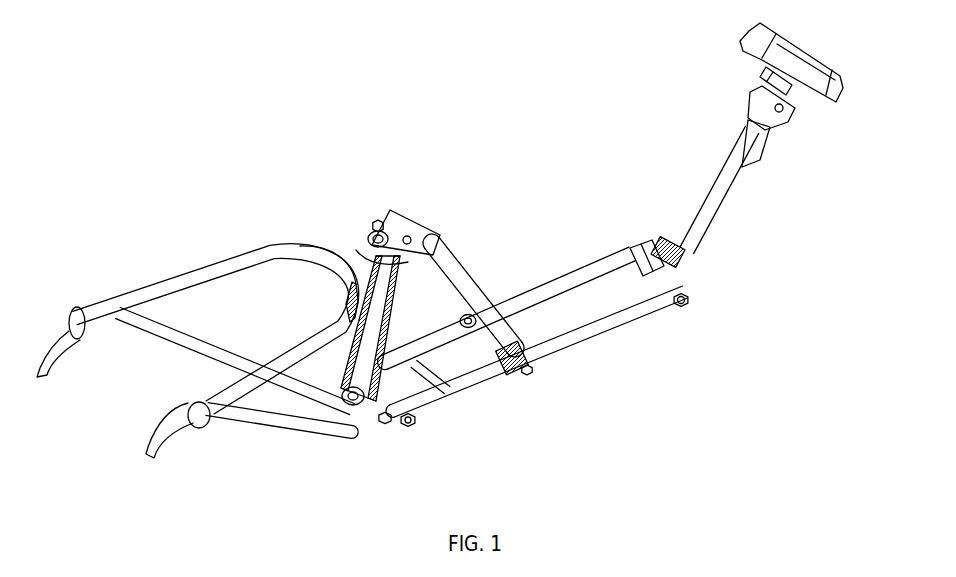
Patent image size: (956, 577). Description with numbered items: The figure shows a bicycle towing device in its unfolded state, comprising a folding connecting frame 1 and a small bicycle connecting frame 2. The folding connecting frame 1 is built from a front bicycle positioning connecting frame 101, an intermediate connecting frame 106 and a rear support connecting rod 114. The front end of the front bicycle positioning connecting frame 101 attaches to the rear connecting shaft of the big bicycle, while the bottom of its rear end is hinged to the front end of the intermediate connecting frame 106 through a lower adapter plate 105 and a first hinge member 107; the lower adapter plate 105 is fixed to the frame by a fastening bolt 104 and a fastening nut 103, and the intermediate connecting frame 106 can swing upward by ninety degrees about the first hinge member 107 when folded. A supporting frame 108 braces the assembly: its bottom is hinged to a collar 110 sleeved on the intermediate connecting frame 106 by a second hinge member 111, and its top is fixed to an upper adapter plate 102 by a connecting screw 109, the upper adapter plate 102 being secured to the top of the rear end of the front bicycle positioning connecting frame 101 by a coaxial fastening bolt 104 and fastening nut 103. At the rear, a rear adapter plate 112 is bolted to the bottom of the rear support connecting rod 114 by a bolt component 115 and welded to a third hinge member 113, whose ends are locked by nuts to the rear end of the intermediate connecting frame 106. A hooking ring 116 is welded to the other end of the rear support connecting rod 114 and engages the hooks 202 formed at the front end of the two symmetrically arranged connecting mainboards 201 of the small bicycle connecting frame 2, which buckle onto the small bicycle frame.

The folding connecting frame 1 is at (435, 278).
The front bicycle positioning connecting frame 101 is at (162, 295).
The upper adapter plate 102 is at (358, 243).
The fastening nut 103 is at (370, 240).
The fastening bolt 104 is at (345, 390).
The lower adapter plate 105 is at (375, 420).
The intermediate connecting frame 106 is at (563, 283).
The first hinge member 107 is at (413, 430).
The supporting frame 108 is at (460, 272).
The connecting screw 109 is at (378, 232).
The collar 110 is at (517, 370).
The second hinge member 111 is at (520, 360).
The rear adapter plate 112 is at (682, 285).
The third hinge member 113 is at (647, 277).
The rear support connecting rod 114 is at (702, 208).
The bolt component 115 is at (687, 253).
The hooking ring 116 is at (752, 112).
The small bicycle connecting frame 2 is at (822, 162).
The connecting mainboard 201 is at (827, 97).
The hook 202 is at (795, 105).